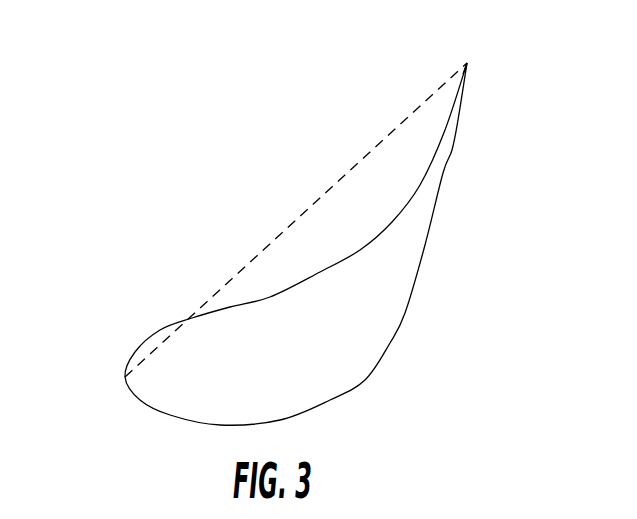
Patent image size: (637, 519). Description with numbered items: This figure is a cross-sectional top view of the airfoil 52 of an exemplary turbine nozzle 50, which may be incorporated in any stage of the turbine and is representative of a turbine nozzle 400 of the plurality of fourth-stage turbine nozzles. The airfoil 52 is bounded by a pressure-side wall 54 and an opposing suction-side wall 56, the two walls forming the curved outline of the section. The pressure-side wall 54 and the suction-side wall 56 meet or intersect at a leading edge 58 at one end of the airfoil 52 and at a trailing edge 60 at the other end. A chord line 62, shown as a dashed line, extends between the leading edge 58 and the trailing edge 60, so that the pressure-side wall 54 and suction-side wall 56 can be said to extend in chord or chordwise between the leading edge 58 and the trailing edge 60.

The turbine nozzle 400 is at (205, 226).
The turbine nozzle 50 is at (242, 183).
The airfoil 52 is at (325, 358).
The pressure-side wall 54 is at (392, 222).
The suction-side wall 56 is at (405, 313).
The leading edge 58 is at (123, 377).
The trailing edge 60 is at (468, 60).
The chord line 62 is at (330, 188).